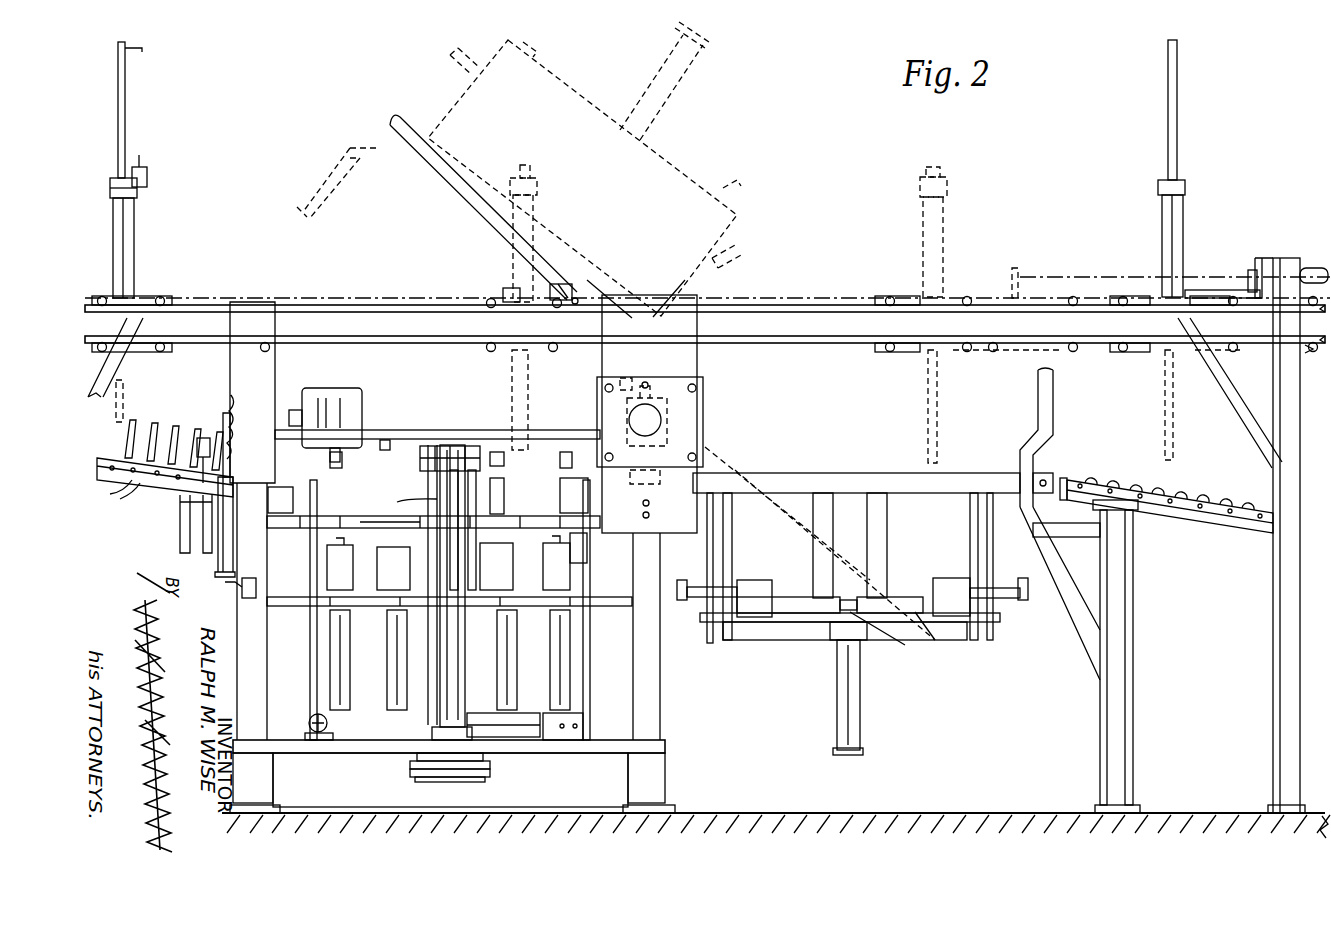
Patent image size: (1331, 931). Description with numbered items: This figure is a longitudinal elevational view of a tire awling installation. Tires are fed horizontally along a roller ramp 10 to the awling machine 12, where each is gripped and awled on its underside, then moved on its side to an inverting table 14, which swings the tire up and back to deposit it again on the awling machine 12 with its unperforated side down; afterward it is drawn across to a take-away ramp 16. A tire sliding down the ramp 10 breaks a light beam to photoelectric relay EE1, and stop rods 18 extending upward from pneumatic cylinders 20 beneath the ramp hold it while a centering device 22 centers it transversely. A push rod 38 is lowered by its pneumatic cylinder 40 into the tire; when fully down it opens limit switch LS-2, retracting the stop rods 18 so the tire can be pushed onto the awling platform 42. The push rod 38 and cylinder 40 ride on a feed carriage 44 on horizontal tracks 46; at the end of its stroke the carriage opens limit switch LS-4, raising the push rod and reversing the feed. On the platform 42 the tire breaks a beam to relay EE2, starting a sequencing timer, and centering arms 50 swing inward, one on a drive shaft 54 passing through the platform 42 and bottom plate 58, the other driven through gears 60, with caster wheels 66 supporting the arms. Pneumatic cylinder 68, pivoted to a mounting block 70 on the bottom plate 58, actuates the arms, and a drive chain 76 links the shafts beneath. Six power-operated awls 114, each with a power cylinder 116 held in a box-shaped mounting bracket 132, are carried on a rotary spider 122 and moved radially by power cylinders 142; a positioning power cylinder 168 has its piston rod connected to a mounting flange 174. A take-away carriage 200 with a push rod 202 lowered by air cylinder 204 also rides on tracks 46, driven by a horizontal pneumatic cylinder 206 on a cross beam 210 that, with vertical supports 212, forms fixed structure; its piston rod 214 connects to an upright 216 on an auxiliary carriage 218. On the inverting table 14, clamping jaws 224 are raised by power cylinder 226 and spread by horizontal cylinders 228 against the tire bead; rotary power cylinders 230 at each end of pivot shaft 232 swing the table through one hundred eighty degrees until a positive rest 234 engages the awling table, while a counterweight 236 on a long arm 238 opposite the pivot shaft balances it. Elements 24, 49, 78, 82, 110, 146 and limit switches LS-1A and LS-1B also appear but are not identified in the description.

The roller ramp 10 is at (165, 497).
The awling machine 12 is at (388, 455).
The inverting table 14 is at (453, 207).
The take-away ramp 16 is at (1222, 508).
The stop rods 18 is at (249, 392).
The pneumatic cylinders 20 is at (181, 540).
The centering device 22 is at (162, 426).
The guide 24 is at (113, 495).
The push rod 38 is at (125, 100).
The pneumatic cylinder 40 is at (133, 238).
The awling platform 42 is at (300, 480).
The feed carriage 44 is at (180, 294).
The horizontal tracks 46 is at (333, 336).
The center line 49 is at (336, 296).
The centering arms 50 is at (412, 441).
The drive shaft 54 is at (440, 685).
The bottom plate 58 is at (375, 754).
The gears 60 is at (420, 457).
The caster wheels 66 is at (330, 460).
The pneumatic cylinder 68 is at (519, 738).
The mounting block 70 is at (570, 740).
The drive chain 76 is at (437, 778).
The piston rod 78 is at (399, 497).
The bracket 82 is at (586, 548).
The cylinder 110 is at (356, 515).
The power-operated awls 114 is at (558, 560).
The power cylinder 116 is at (390, 670).
The rotary spider 122 is at (505, 590).
The mounting bracket 132 is at (327, 575).
The power cylinders 142 is at (330, 604).
The posts 146 is at (452, 590).
The power cylinder 168 is at (310, 717).
The mounting flange 174 is at (318, 740).
The take-away carriage 200 is at (953, 297).
The push rod 202 is at (1177, 105).
The air cylinder 204 is at (945, 215).
The pneumatic cylinder 206 is at (1315, 266).
The horizontal cross beam 210 is at (1266, 262).
The vertical supports 212 is at (1285, 628).
The piston rod 214 is at (1018, 268).
The upright 216 is at (1250, 276).
The auxiliary carriage 218 is at (1020, 349).
The clamping jaws 224 is at (878, 532).
The power cylinder 226 is at (862, 712).
The horizontal cylinders 228 is at (684, 602).
The rotary power cylinders 230 is at (703, 410).
The pivot shaft 232 is at (628, 410).
The positive rest 234 is at (315, 180).
The counterweight 236 is at (315, 388).
The long arm 238 is at (443, 432).
The limit switch LS-1A is at (626, 366).
The limit switch LS-1B is at (658, 498).
The limit switch LS-2 is at (148, 182).
The limit switch LS-4 is at (583, 288).
The photoelectric control relay EE1 is at (203, 437).
The photoelectric control relay EE2 is at (510, 496).